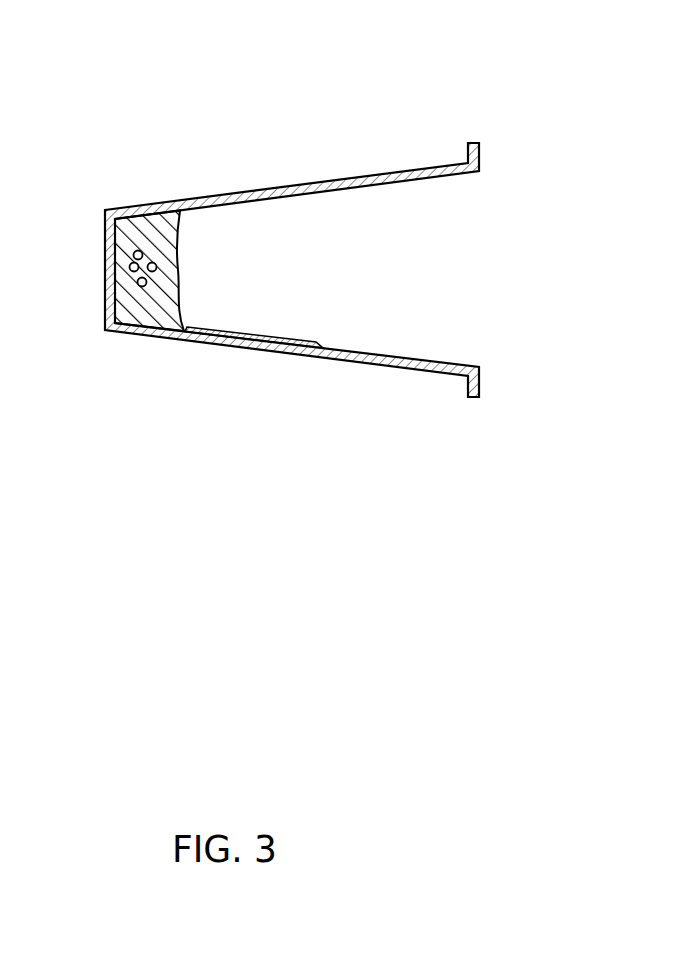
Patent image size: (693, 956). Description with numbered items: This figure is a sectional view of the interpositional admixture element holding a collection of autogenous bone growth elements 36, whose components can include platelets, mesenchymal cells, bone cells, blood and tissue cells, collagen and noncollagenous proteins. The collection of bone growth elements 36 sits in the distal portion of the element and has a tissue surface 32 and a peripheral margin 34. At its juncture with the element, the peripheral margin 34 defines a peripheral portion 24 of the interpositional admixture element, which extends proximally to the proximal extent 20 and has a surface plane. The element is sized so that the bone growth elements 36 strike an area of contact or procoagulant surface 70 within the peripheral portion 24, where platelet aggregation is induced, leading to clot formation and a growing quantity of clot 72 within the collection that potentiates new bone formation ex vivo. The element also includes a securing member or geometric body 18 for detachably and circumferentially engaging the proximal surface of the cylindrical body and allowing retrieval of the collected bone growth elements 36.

The securing member or geometric body 18 is at (464, 389).
The proximal extent 20 is at (482, 373).
The peripheral portion 24 is at (450, 360).
The tissue surface 32 is at (181, 253).
The peripheral margin 34 is at (322, 347).
The collection of bone growth elements 36 is at (143, 306).
The procoagulant surface 70 is at (383, 357).
The quantity of clot 72 is at (107, 303).